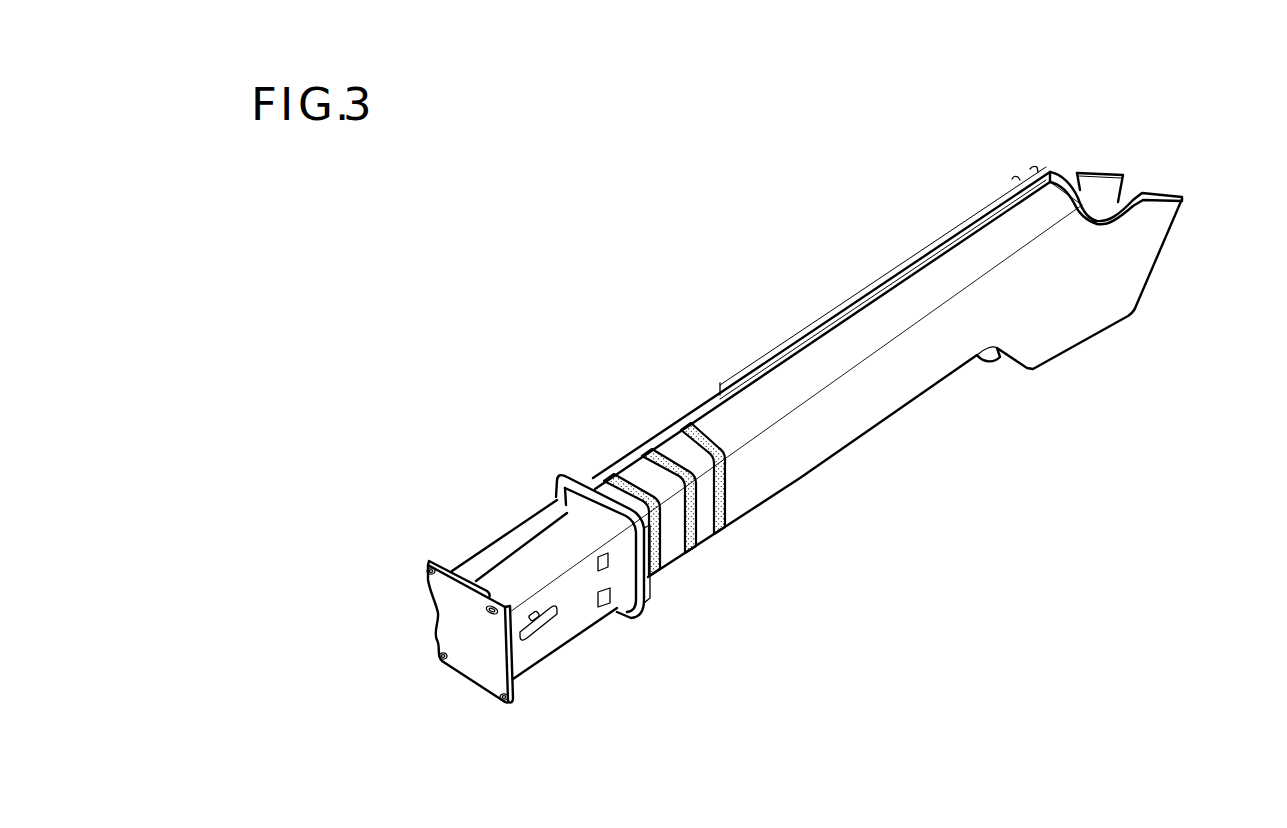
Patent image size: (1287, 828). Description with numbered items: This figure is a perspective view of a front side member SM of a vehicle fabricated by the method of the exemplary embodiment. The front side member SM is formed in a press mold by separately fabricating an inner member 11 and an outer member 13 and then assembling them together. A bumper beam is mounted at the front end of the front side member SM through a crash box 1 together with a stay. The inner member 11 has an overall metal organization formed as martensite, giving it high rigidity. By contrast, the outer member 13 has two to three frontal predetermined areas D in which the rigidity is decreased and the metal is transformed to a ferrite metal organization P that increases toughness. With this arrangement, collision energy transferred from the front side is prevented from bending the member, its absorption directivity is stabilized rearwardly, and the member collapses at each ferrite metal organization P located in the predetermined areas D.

The crash box 1 is at (568, 647).
The inner member 11 is at (895, 370).
The outer member 13 is at (1002, 192).
The front side member SM is at (790, 333).
The ferrite metal organization P is at (660, 569).
The frontal predetermined area D is at (667, 420).